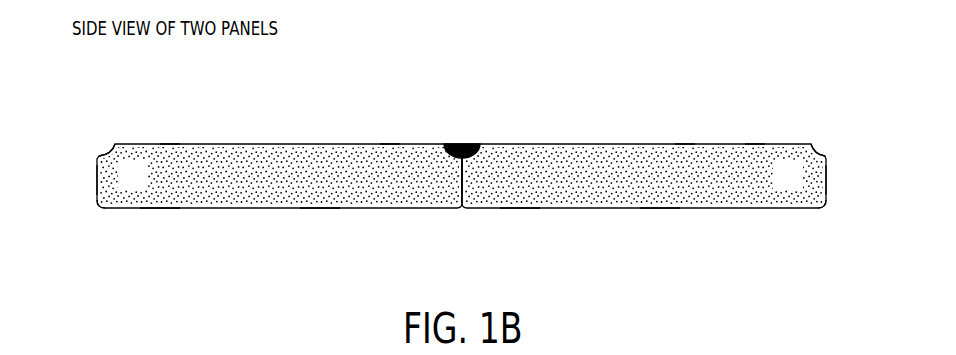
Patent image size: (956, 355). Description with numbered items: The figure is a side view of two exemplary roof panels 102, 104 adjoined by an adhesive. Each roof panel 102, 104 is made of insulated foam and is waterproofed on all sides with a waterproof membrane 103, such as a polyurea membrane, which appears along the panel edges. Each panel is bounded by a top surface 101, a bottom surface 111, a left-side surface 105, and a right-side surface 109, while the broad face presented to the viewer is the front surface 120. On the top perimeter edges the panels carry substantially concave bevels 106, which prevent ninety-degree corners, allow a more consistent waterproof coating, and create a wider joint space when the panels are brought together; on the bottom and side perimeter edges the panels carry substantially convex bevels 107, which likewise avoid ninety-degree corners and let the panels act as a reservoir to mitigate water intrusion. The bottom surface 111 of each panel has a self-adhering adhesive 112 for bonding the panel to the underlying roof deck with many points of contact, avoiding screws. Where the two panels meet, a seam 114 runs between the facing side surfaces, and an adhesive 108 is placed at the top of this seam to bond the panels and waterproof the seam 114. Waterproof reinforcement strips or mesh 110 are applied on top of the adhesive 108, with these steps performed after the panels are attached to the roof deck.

The top surface 101 is at (393, 143).
The roof panel 102 is at (301, 116).
The waterproof membrane 103 is at (170, 143).
The roof panel 104 is at (604, 126).
The left-side surface 105 is at (97, 184).
The concave bevel 106 is at (109, 148).
The convex bevel 107 is at (103, 208).
The adhesive 108 is at (452, 143).
The right-side surface 109 is at (827, 181).
The waterproof reinforcement strips and/or mesh 110 is at (485, 143).
The bottom surface 111 is at (318, 210).
The self-adhering adhesive 112 is at (152, 210).
The seam 114 is at (462, 208).
The front surface 120 is at (148, 188).